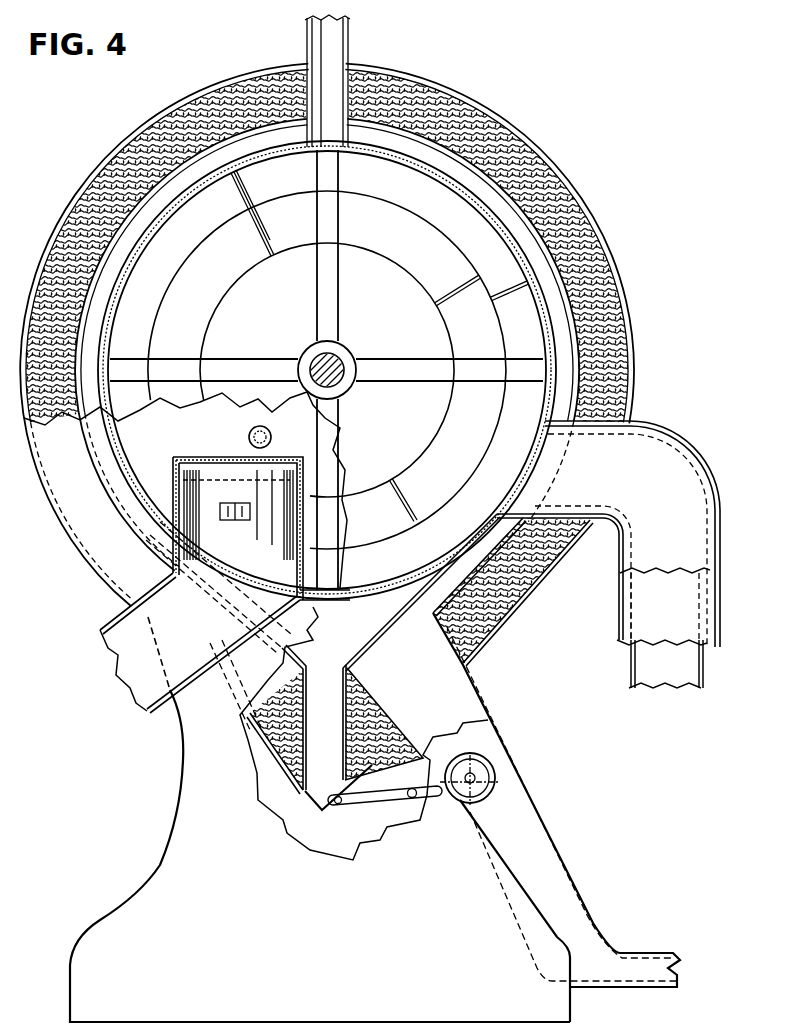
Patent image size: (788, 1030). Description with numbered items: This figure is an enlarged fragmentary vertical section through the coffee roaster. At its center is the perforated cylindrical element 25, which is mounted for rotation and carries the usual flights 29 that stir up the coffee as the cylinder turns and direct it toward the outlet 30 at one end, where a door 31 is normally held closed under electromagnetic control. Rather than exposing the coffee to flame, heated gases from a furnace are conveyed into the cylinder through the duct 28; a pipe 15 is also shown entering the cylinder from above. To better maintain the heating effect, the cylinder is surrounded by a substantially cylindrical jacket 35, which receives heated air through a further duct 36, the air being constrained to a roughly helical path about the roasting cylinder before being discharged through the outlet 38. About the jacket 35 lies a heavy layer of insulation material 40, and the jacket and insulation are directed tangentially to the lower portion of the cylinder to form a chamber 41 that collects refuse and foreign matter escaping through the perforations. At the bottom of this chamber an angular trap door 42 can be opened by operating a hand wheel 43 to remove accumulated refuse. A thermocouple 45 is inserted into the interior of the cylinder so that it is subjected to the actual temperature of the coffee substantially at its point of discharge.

The feed pipe 15 is at (348, 43).
The perforated cylindrical element 25 is at (456, 195).
The duct 28 is at (620, 560).
The flights 29 is at (262, 260).
The outlet 30 is at (121, 642).
The door 31 is at (231, 533).
The cylindrical jacket 35 is at (503, 230).
The further duct 36 is at (638, 663).
The outlet 38 is at (537, 827).
The insulation material 40 is at (467, 117).
The chamber 41 is at (420, 654).
The angular trap door 42 is at (312, 802).
The hand wheel 43 is at (467, 807).
The thermocouple 45 is at (249, 436).